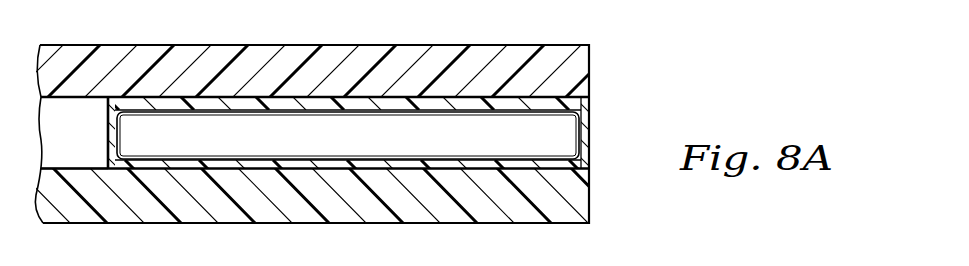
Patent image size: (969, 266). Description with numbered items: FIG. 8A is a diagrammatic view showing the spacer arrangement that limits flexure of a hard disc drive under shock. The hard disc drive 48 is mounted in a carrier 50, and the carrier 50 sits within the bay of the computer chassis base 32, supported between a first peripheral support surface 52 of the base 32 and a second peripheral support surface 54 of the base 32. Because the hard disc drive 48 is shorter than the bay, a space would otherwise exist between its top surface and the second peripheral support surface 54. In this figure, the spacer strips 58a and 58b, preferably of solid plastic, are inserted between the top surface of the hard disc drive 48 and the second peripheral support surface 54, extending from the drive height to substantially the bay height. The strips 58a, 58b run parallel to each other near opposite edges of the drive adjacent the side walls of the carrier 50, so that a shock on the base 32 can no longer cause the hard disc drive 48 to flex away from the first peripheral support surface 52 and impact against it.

The computer chassis base 32 is at (590, 203).
The hard disc drive 48 is at (563, 139).
The carrier 50 is at (108, 127).
The first peripheral support surface 52 is at (251, 176).
The second peripheral support surface 54 is at (318, 100).
The strip 58a is at (467, 105).
The strip 58b is at (353, 181).